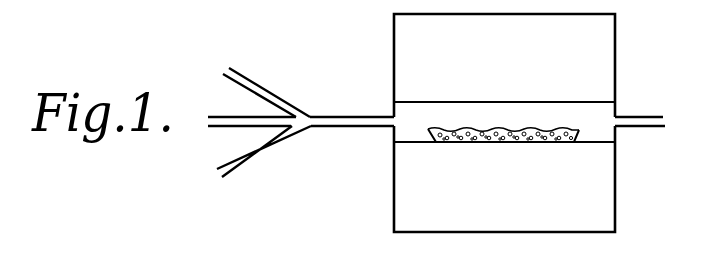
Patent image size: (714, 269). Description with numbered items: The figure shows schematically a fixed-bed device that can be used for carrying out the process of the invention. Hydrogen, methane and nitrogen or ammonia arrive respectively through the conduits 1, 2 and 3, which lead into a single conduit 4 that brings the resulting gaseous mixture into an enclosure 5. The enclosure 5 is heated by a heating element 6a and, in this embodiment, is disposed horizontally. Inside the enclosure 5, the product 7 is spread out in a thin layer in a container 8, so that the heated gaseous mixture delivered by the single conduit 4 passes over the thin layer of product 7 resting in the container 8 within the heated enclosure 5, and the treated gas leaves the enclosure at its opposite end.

The conduit 1 is at (279, 101).
The conduit 2 is at (240, 118).
The conduit 3 is at (263, 148).
The single conduit 4 is at (355, 127).
The enclosure 5 is at (435, 107).
The heating element 6a is at (507, 66).
The product 7 is at (497, 129).
The container 8 is at (578, 132).